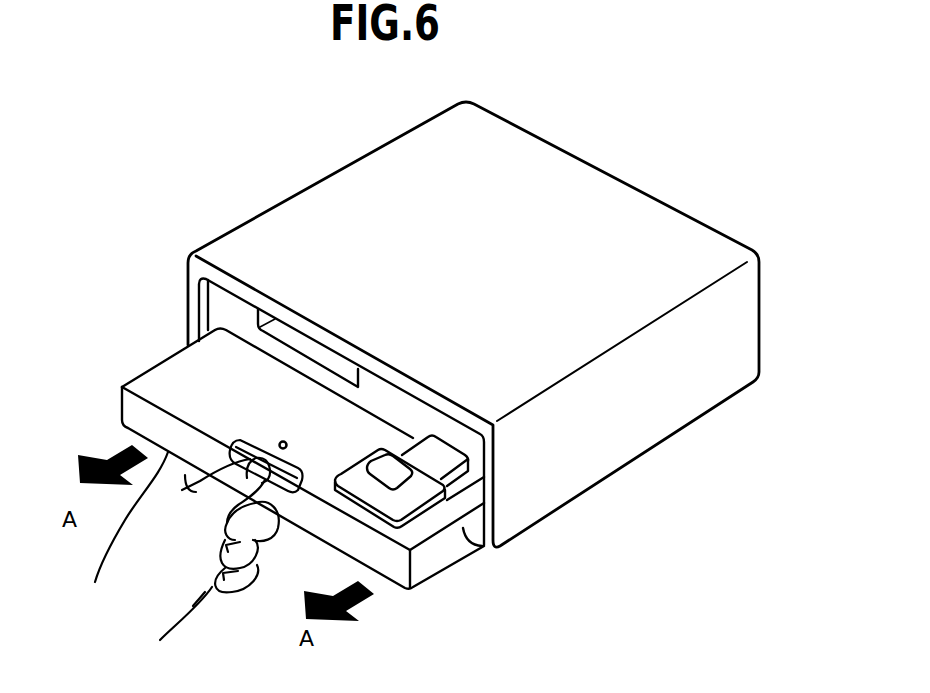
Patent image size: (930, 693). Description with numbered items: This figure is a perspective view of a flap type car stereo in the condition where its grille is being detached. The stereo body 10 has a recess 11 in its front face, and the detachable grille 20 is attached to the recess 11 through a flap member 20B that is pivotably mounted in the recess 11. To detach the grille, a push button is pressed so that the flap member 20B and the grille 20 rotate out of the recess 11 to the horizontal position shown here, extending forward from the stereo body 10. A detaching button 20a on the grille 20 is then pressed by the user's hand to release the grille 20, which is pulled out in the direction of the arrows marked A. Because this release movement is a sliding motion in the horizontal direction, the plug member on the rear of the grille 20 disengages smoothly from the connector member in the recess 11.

The stereo body 10 is at (640, 222).
The recess 11 is at (397, 410).
The grille 20 is at (324, 467).
The flap member 20B is at (167, 382).
The detaching button 20a is at (248, 438).